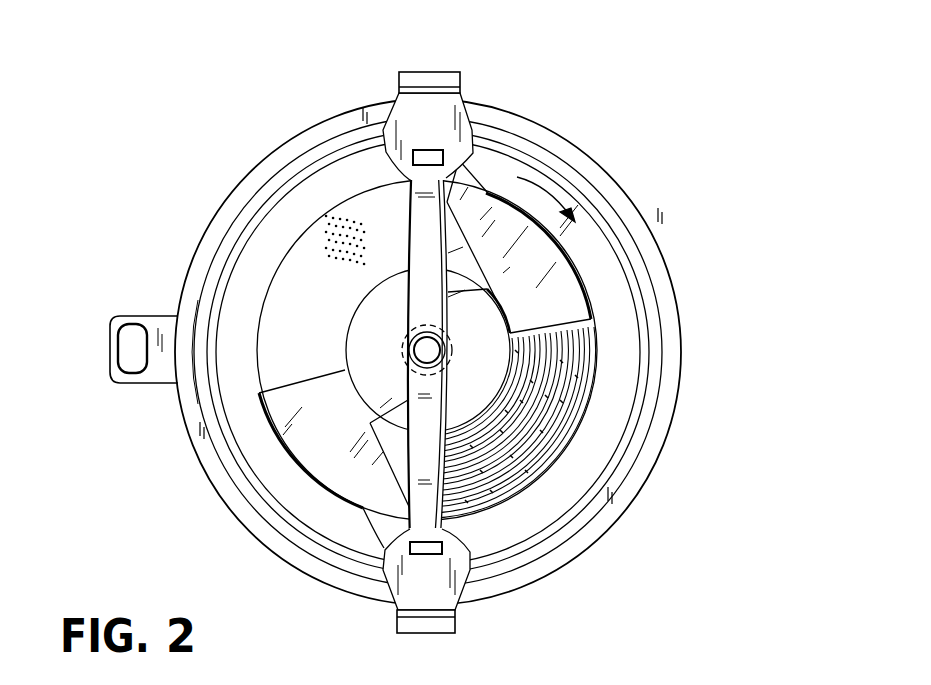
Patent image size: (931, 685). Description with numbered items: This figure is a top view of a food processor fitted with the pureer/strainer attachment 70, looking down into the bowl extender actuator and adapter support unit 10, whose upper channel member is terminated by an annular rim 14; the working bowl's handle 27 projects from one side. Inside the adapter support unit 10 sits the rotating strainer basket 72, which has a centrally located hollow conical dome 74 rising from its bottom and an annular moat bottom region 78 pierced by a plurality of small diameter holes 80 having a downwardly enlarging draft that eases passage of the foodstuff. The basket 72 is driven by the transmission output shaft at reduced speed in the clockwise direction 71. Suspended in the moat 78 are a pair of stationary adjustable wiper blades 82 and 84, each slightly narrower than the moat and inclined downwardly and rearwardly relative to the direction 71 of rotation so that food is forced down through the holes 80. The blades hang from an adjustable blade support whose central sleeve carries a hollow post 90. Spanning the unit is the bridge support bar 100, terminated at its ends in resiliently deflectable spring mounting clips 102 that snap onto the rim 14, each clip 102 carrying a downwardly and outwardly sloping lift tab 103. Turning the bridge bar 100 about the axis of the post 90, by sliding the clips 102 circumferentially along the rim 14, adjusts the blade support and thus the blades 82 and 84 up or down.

The bowl extender actuator and adapter support unit 10 is at (667, 193).
The annular rim 14 is at (670, 282).
The handle 27 is at (110, 340).
The pureer/strainer attachment 70 is at (588, 113).
The clockwise direction 71 is at (560, 173).
The rotating strainer basket 72 is at (597, 254).
The conical dome 74 is at (487, 374).
The annular moat bottom region 78 is at (545, 442).
The small diameter holes 80 is at (325, 243).
The wiper blade 82 is at (547, 302).
The wiper blade 84 is at (336, 439).
The hollow post 90 is at (432, 350).
The bridge support bar 100 is at (417, 282).
The spring mounting clips 102 is at (460, 83).
The lift tabs 103 is at (460, 77).